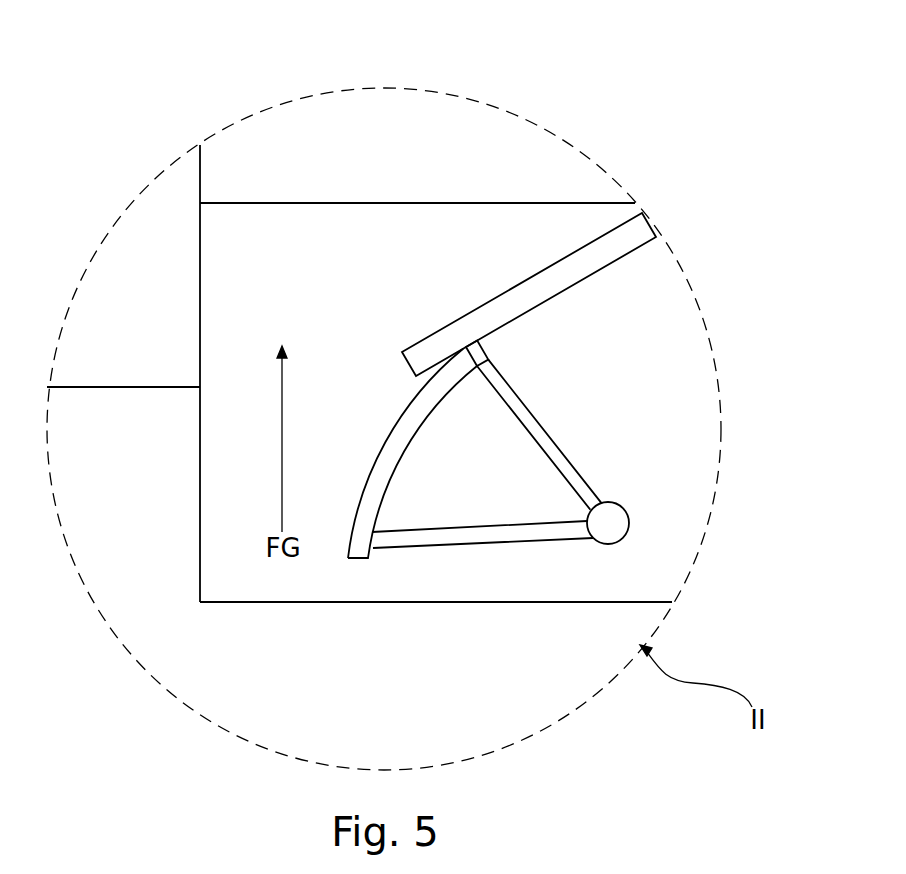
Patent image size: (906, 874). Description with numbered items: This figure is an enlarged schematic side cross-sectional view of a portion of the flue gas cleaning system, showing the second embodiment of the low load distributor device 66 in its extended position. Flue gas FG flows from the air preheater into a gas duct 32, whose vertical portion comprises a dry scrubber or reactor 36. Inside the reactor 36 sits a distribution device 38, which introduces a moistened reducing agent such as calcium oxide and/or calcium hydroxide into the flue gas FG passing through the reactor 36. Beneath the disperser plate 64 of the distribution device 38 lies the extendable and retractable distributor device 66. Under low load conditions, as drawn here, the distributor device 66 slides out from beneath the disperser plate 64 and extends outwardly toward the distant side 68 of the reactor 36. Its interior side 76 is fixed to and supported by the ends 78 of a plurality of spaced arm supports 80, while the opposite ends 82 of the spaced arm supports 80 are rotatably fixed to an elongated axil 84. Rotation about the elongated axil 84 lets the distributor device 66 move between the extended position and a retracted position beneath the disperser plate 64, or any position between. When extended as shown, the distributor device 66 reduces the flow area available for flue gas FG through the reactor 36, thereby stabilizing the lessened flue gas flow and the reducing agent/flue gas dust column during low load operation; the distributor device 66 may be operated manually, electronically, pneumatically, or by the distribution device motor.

The gas duct 32 is at (250, 695).
The reactor 36 is at (355, 115).
The distribution device 38 is at (662, 330).
The disperser plate 64 is at (487, 322).
The distributor device 66 is at (368, 468).
The distant side 68 is at (200, 387).
The interior side 76 is at (413, 437).
The ends 78 is at (484, 364).
The spaced arm supports 80 is at (532, 422).
The ends 82 is at (612, 522).
The elongated axil 84 is at (632, 522).